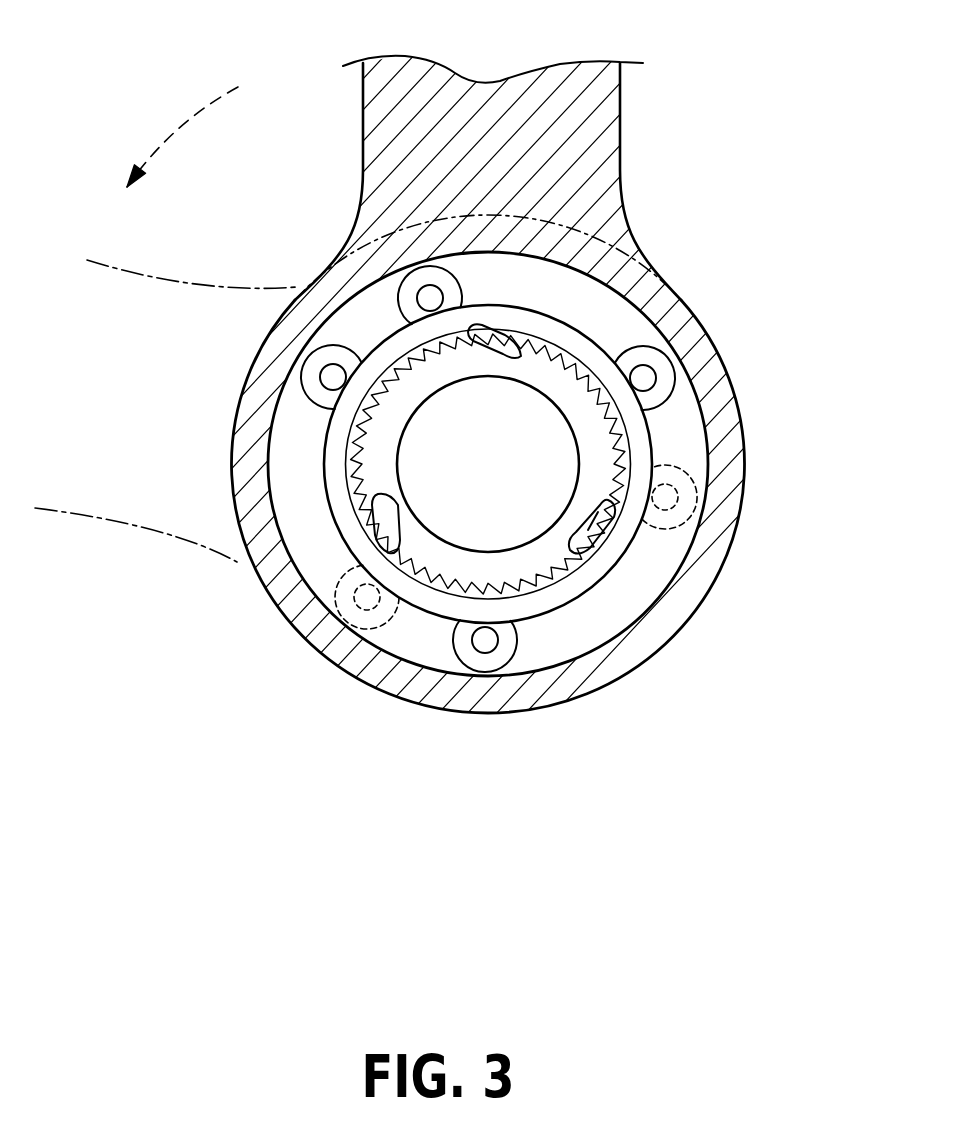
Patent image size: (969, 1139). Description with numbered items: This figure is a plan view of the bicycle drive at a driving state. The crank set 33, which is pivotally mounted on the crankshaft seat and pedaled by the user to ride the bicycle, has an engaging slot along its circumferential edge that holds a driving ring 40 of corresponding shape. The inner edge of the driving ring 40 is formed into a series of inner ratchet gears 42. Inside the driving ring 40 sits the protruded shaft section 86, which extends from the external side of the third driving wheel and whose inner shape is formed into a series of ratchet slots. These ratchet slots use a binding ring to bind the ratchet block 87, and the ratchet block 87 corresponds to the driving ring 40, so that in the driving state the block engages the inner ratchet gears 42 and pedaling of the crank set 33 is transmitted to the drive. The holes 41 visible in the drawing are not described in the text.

The crank set 33 is at (600, 142).
The driving ring 40 is at (640, 433).
The bolt hole 41 is at (660, 370).
The inner ratchet gears 42 is at (630, 510).
The protruded shaft section 86 is at (527, 567).
The ratchet block 87 is at (600, 543).